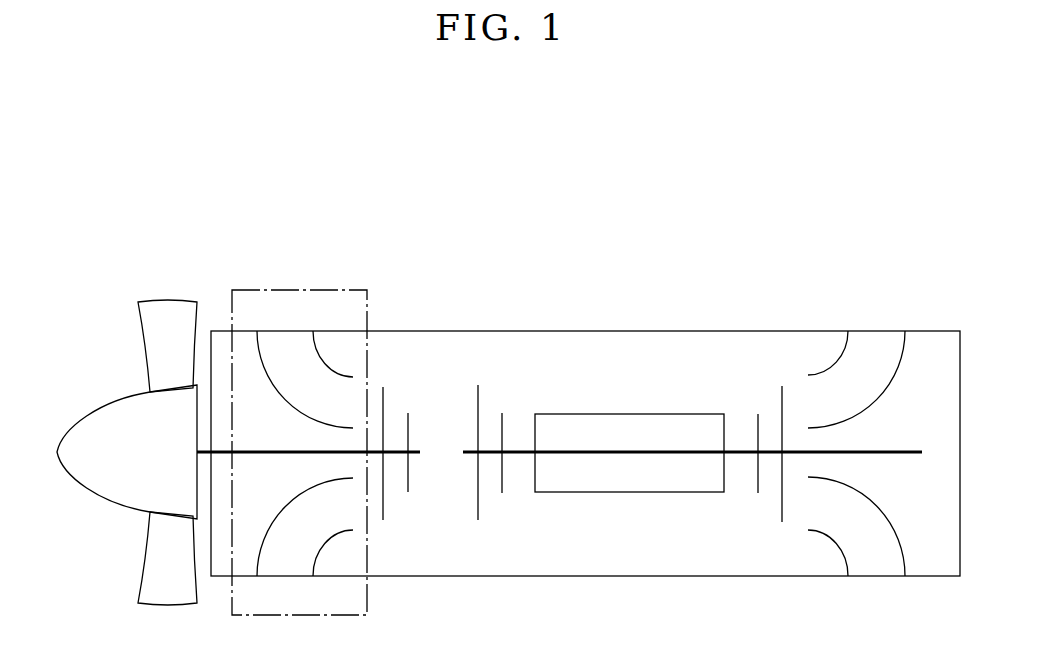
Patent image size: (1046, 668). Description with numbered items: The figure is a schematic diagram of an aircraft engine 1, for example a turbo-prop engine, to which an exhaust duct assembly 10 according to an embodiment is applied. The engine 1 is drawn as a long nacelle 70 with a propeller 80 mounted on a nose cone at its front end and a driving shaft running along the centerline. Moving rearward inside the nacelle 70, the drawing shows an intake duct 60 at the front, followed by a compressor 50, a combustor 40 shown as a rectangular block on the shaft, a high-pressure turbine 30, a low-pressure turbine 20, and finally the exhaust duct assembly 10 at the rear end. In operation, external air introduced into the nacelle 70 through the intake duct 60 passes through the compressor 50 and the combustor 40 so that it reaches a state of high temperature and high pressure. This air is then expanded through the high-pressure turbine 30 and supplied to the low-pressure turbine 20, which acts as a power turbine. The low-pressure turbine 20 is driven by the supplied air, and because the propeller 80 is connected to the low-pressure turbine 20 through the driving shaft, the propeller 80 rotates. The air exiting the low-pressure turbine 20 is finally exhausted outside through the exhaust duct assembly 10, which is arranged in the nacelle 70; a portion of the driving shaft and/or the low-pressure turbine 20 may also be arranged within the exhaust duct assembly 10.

The engine 1 is at (901, 185).
The exhaust duct assembly 10 is at (336, 352).
The low-pressure turbine 20 is at (400, 510).
The high-pressure turbine 30 is at (499, 510).
The combustor 40 is at (628, 510).
The compressor 50 is at (759, 511).
The intake duct 60 is at (826, 553).
The nacelle 70 is at (650, 316).
The propeller 80 is at (90, 384).